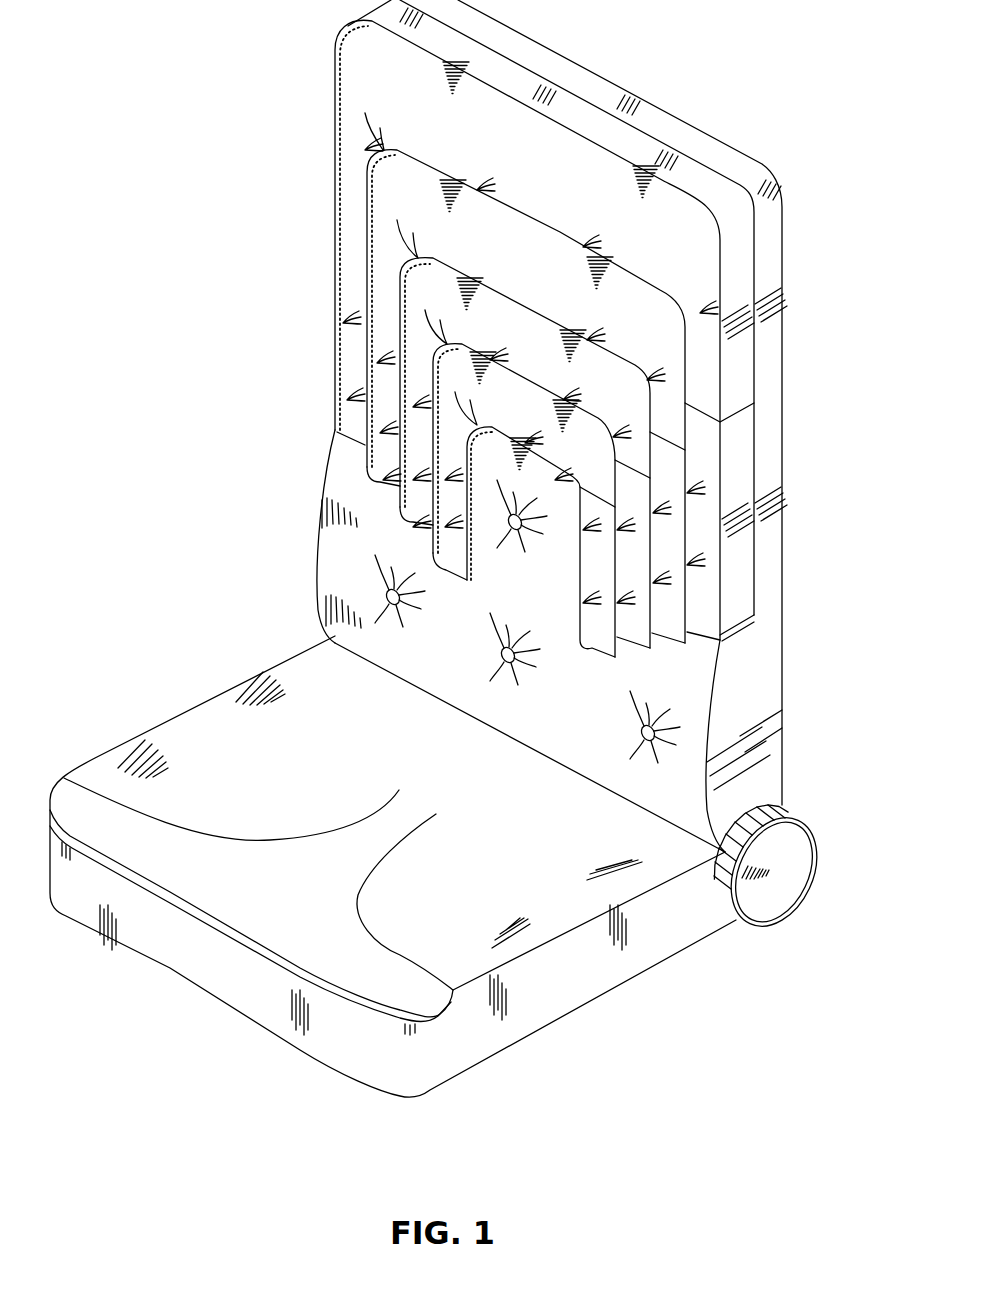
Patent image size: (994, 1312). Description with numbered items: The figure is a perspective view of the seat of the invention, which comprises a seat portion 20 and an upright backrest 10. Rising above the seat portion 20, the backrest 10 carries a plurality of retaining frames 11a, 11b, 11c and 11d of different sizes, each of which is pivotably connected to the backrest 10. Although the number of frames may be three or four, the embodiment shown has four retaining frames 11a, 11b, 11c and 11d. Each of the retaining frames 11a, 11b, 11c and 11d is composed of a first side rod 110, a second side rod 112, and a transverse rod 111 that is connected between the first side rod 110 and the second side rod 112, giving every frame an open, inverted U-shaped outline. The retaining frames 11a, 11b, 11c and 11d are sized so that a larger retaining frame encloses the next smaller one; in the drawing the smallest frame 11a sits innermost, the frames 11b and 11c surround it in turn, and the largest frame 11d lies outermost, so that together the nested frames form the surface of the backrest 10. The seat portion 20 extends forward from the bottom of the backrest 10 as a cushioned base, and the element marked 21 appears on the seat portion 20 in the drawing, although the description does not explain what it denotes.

The backrest 10 is at (755, 665).
The retaining frame 11a is at (447, 498).
The retaining frame 11b is at (407, 452).
The retaining frame 11c is at (373, 376).
The retaining frame 11d is at (347, 274).
The first side rod 110 is at (447, 537).
The transverse rod 111 is at (558, 414).
The second side rod 112 is at (603, 562).
The seat portion 20 is at (222, 722).
The seat cushion 21 is at (118, 822).